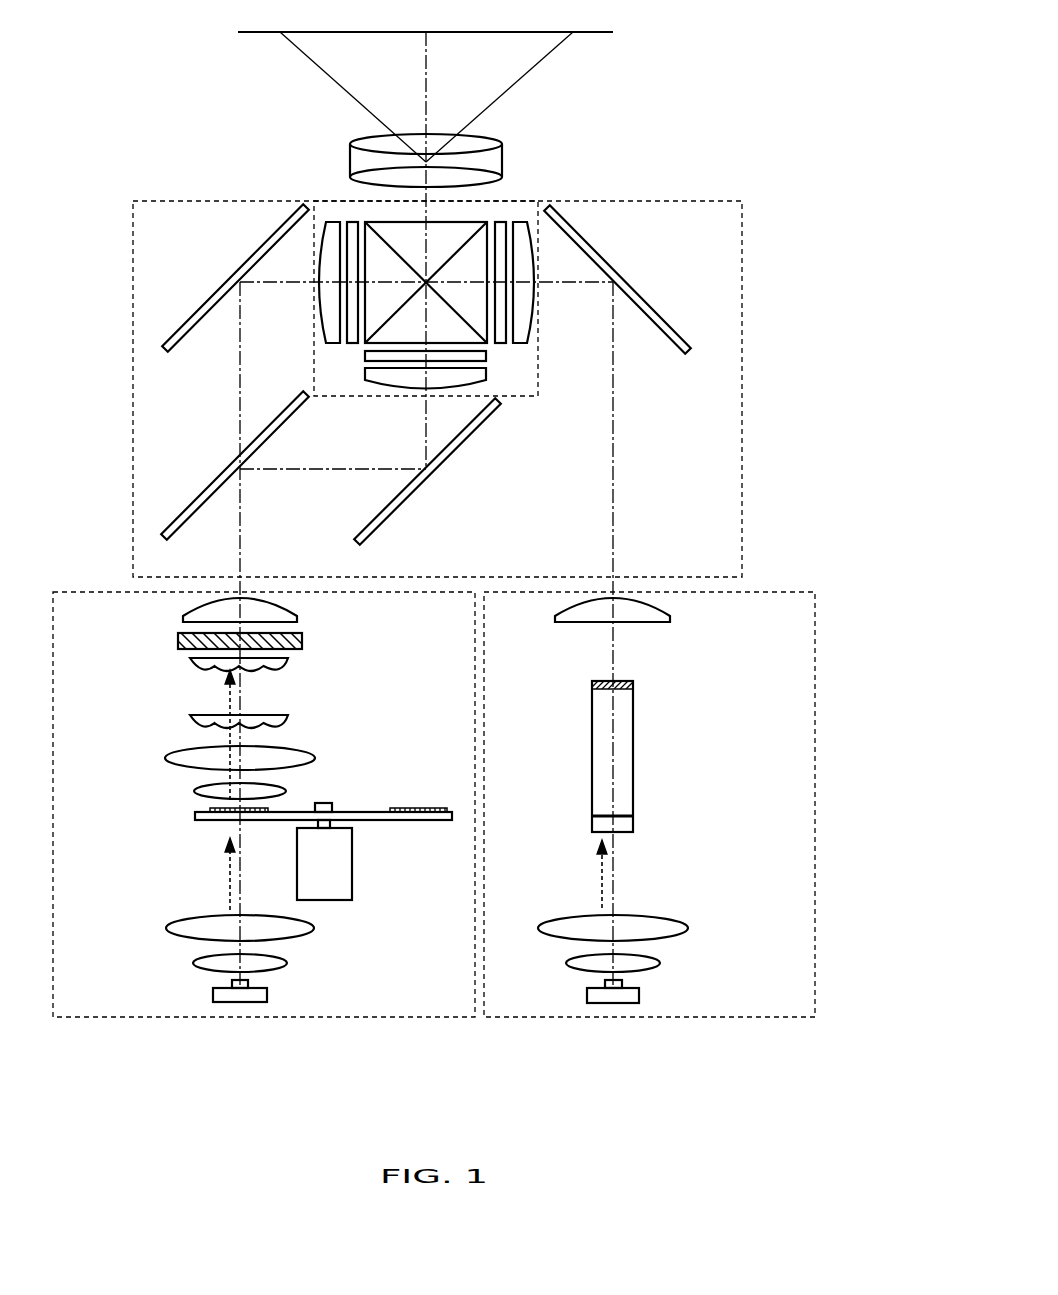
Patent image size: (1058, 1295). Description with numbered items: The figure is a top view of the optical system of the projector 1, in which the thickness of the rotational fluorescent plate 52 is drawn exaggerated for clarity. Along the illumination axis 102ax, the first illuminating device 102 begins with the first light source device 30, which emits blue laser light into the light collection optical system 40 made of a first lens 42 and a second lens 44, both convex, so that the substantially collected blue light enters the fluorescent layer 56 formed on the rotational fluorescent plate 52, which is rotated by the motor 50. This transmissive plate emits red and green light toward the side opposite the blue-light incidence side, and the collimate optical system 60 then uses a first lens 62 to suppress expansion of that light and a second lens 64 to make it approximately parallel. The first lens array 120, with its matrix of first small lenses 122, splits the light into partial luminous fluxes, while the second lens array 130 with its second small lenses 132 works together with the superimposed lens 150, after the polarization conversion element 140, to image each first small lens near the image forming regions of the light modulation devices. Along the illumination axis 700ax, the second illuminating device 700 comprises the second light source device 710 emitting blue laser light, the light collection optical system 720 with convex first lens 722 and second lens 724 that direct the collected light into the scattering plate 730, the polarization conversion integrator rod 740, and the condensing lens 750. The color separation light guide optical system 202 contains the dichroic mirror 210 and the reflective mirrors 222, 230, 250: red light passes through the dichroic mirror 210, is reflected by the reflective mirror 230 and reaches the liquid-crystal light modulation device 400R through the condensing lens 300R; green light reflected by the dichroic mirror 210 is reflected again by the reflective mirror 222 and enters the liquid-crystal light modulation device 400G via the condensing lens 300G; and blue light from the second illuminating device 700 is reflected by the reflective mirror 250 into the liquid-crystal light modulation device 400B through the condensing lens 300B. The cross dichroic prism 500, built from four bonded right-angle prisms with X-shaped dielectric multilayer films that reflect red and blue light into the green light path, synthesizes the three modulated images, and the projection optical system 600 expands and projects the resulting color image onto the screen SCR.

The projector 1 is at (712, 76).
The screen SCR is at (600, 34).
The projection optical system 600 is at (350, 158).
The cross dichroic prism 500 is at (477, 220).
The condensing lens 300R is at (330, 220).
The liquid-crystal light modulation device 400R is at (352, 220).
The condensing lens 300B is at (515, 220).
The liquid-crystal light modulation device 400B is at (500, 220).
The condensing lens 300G is at (363, 375).
The liquid-crystal light modulation device 400G is at (365, 355).
The color separation light guide optical system 202 is at (133, 413).
The reflective mirror 230 is at (177, 330).
The reflective mirror 250 is at (680, 330).
The dichroic mirror 210 is at (173, 518).
The reflective mirror 222 is at (390, 523).
The illumination axis 102ax is at (237, 587).
The illumination axis 700ax is at (613, 580).
The first illuminating device 102 is at (347, 1017).
The superimposed lens 150 is at (297, 618).
The polarization conversion element 140 is at (302, 641).
The second lens array 130 is at (288, 660).
The second small lens 132 is at (197, 663).
The first lens array 120 is at (288, 717).
The first small lens 122 is at (197, 718).
The collimate optical system 60 is at (104, 752).
The second lens 64 is at (168, 757).
The first lens 62 is at (195, 791).
The motor 50 is at (352, 860).
The rotational fluorescent plate 52 is at (369, 799).
The fluorescent layer 56 is at (422, 807).
The light collection optical system 40 is at (371, 912).
The second lens 44 is at (314, 928).
The first lens 42 is at (287, 963).
The first light source device 30 is at (208, 990).
The second illuminating device 700 is at (652, 1017).
The condensing lens 750 is at (670, 618).
The polarization conversion integrator rod 740 is at (633, 743).
The scattering plate 730 is at (633, 825).
The light collection optical system 720 is at (758, 908).
The second lens 724 is at (688, 928).
The first lens 722 is at (660, 963).
The second light source device 710 is at (581, 990).